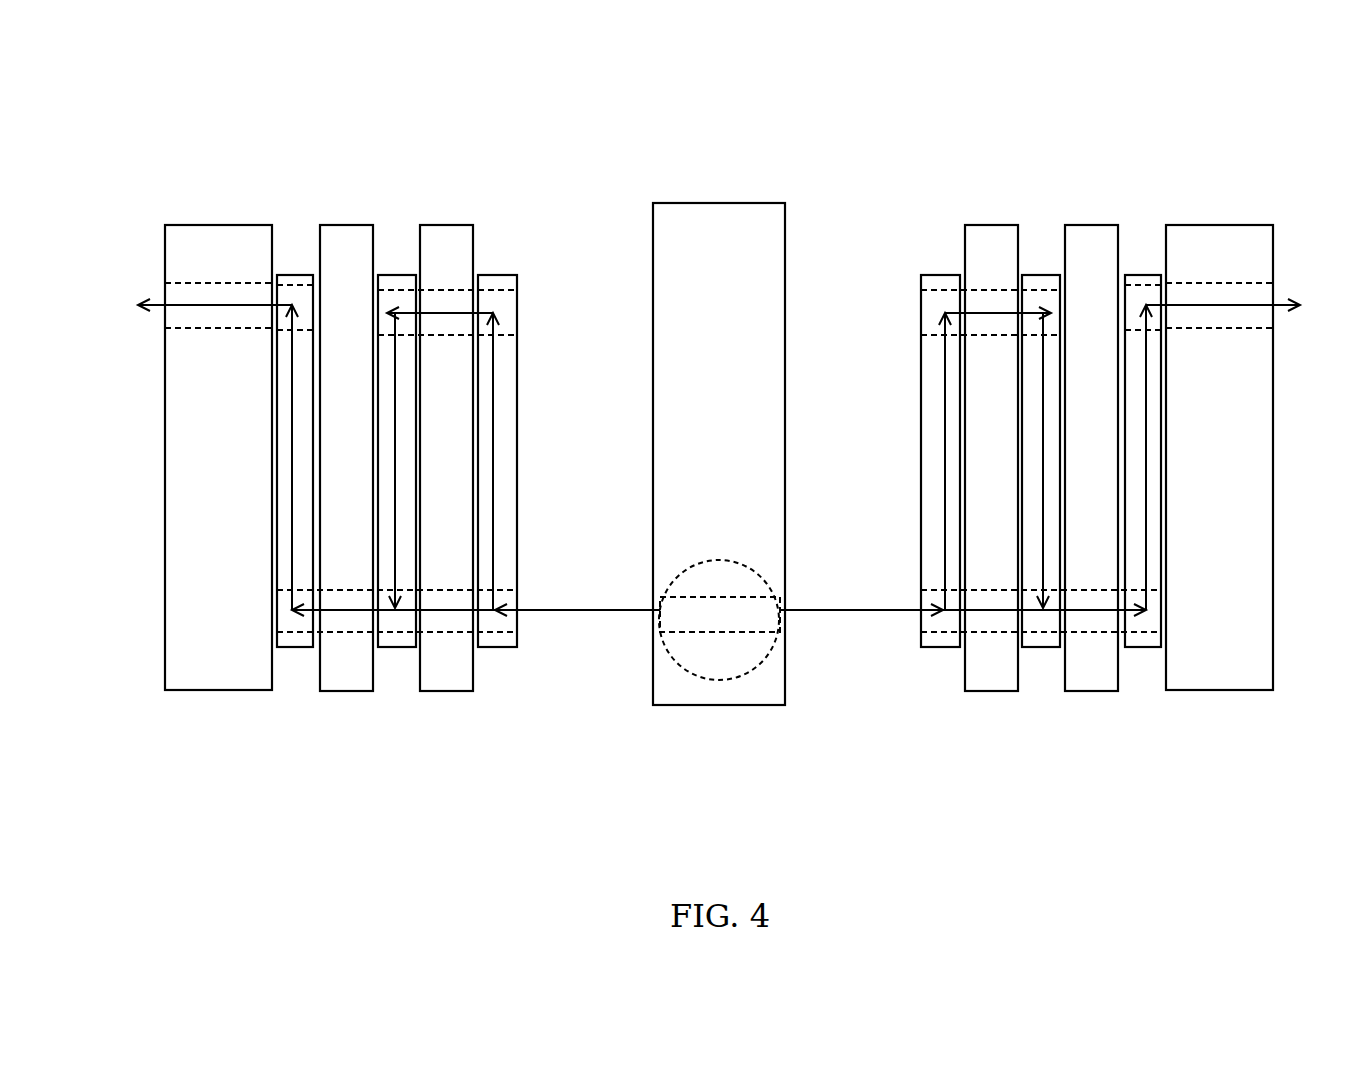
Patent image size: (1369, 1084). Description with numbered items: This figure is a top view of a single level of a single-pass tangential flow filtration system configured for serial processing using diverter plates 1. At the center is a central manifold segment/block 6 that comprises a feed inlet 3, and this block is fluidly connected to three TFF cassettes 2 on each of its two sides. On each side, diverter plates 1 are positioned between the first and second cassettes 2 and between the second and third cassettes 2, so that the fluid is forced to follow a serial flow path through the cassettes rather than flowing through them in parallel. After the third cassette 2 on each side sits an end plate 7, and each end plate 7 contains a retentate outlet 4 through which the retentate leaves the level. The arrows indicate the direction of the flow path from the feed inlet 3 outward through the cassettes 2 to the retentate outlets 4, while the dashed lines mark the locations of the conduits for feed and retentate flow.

The diverter plate 1 is at (345, 220).
The TFF cassette 2 is at (302, 653).
The feed inlet 3 is at (767, 622).
The retentate outlet 4 is at (165, 283).
The central manifold segment/block 6 is at (718, 203).
The end plate 7 is at (162, 507).